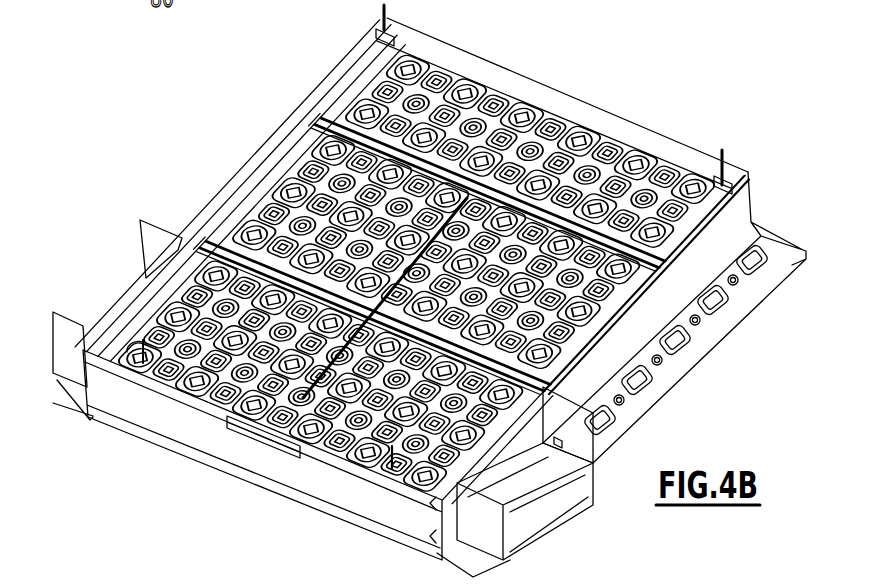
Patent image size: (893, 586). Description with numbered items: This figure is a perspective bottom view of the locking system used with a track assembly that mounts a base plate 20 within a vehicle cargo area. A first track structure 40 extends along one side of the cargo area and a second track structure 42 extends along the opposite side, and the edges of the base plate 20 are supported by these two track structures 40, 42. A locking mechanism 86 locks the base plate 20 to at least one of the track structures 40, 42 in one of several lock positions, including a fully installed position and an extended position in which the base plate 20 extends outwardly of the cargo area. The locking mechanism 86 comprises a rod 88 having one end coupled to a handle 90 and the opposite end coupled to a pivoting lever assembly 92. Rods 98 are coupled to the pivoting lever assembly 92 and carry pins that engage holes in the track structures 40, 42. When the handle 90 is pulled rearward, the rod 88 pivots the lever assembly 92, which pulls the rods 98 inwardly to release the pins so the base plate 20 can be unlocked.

The base plate 20 is at (164, 390).
The first track structure 40 is at (110, 333).
The second track structure 42 is at (735, 218).
The locking mechanism 86 is at (233, 436).
The rod 88 is at (330, 386).
The handle 90 is at (295, 452).
The pivoting lever assembly 92 is at (467, 198).
The rods 98 is at (417, 273).